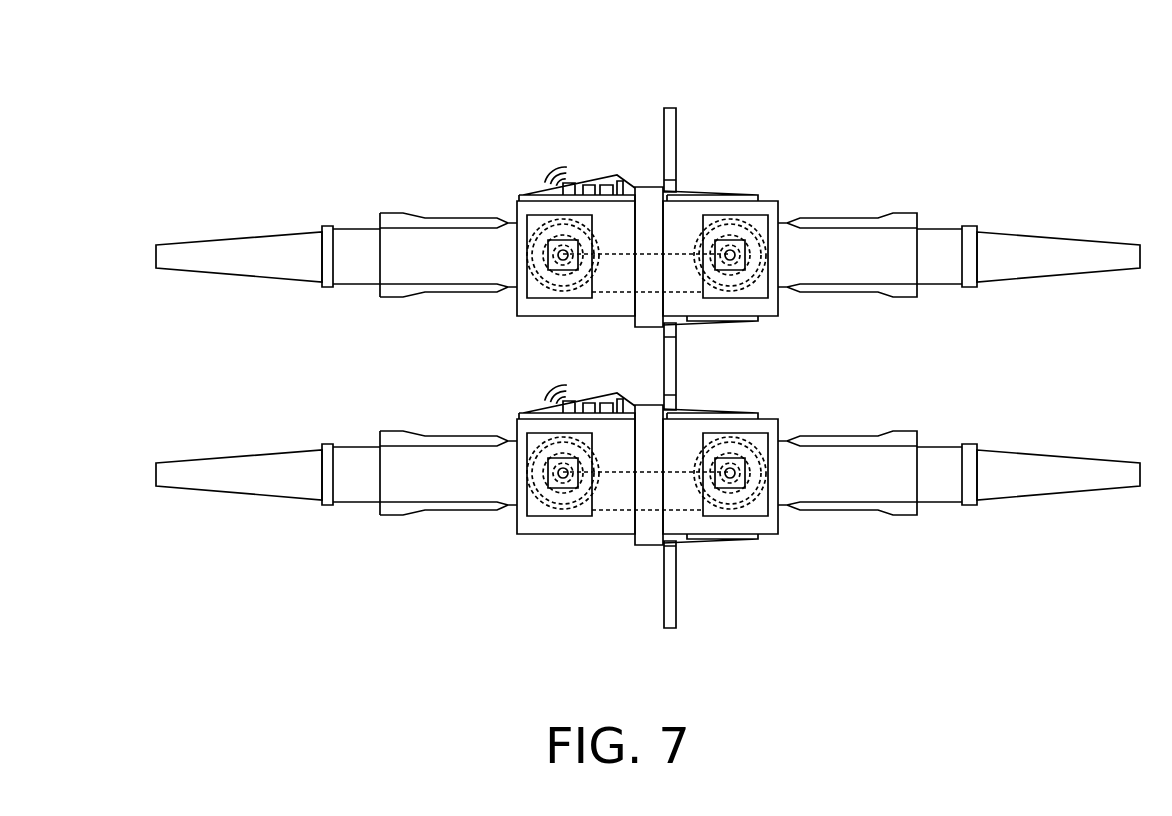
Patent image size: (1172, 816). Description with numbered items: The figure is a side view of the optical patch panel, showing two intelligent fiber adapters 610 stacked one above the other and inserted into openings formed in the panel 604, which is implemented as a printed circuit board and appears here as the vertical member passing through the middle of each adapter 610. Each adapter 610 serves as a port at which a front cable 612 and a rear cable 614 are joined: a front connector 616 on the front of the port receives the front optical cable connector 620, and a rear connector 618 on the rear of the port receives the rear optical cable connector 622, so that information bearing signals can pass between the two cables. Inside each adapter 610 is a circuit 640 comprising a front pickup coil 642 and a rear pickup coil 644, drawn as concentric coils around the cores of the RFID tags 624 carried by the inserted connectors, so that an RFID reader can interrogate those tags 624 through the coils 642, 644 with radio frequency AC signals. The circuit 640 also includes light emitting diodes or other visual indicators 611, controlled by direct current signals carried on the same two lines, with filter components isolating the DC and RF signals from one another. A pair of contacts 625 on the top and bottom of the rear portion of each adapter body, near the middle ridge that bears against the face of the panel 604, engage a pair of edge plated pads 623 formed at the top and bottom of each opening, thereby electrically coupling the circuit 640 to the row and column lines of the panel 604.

The panel 604 is at (670, 602).
The intelligent fiber adapter 610 is at (587, 85).
The light emitting diode 611 is at (553, 167).
The front cable 612 is at (196, 226).
The rear cable 614 is at (1028, 400).
The front connector 616 is at (425, 217).
The rear connector 618 is at (880, 215).
The front optical cable connector 620 is at (588, 153).
The rear optical cable connector 622 is at (789, 165).
The edge plated pad 623 is at (668, 182).
The RFID tag 624 is at (545, 257).
The contact 625 is at (685, 195).
The circuit 640 is at (695, 208).
The front pickup coil 642 is at (530, 237).
The rear pickup coil 644 is at (757, 263).